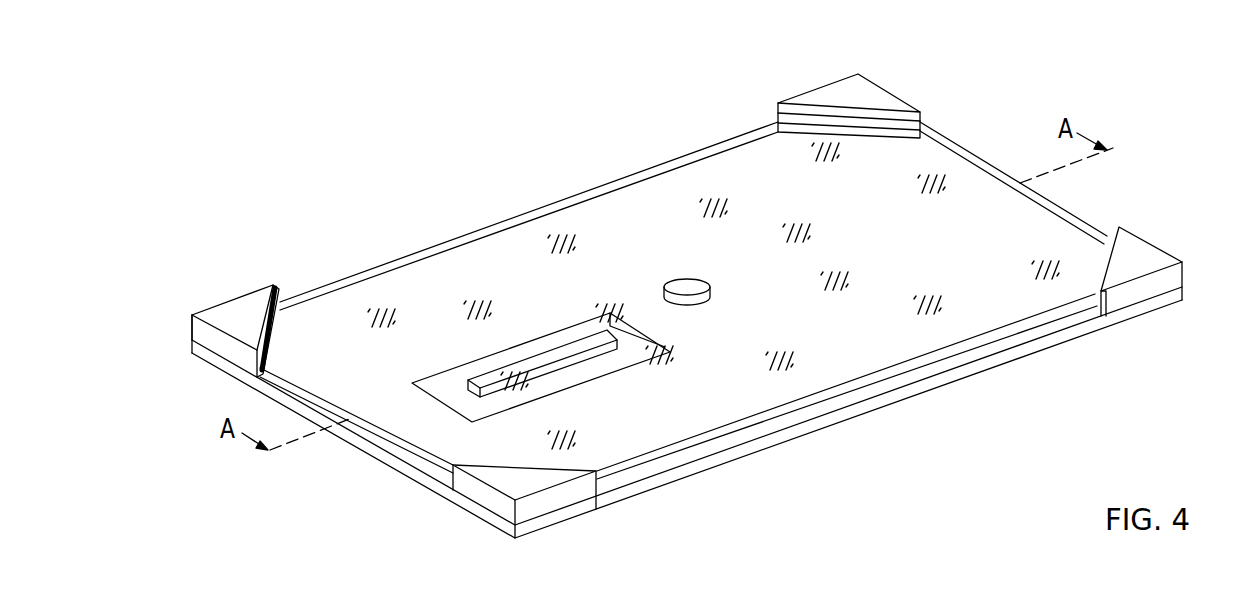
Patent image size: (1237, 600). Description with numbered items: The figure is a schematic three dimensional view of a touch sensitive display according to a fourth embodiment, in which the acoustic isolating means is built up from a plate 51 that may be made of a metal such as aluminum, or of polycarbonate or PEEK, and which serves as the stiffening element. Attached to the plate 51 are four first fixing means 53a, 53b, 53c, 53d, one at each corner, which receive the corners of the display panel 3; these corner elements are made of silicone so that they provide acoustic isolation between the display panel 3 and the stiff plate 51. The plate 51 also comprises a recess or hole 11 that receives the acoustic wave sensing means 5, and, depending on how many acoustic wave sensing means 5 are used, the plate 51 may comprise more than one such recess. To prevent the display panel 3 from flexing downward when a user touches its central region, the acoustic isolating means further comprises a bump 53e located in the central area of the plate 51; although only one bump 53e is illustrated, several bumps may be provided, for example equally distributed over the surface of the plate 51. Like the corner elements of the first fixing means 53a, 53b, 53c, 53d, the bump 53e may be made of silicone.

The display panel 3 is at (783, 412).
The acoustic wave sensing means 5 is at (535, 367).
The recess or hole 11 is at (450, 400).
The plate 51 is at (350, 424).
The first fixing means 53a is at (497, 477).
The first fixing means 53b is at (1133, 247).
The first fixing means 53c is at (887, 95).
The first fixing means 53d is at (242, 302).
The bump 53e is at (710, 285).